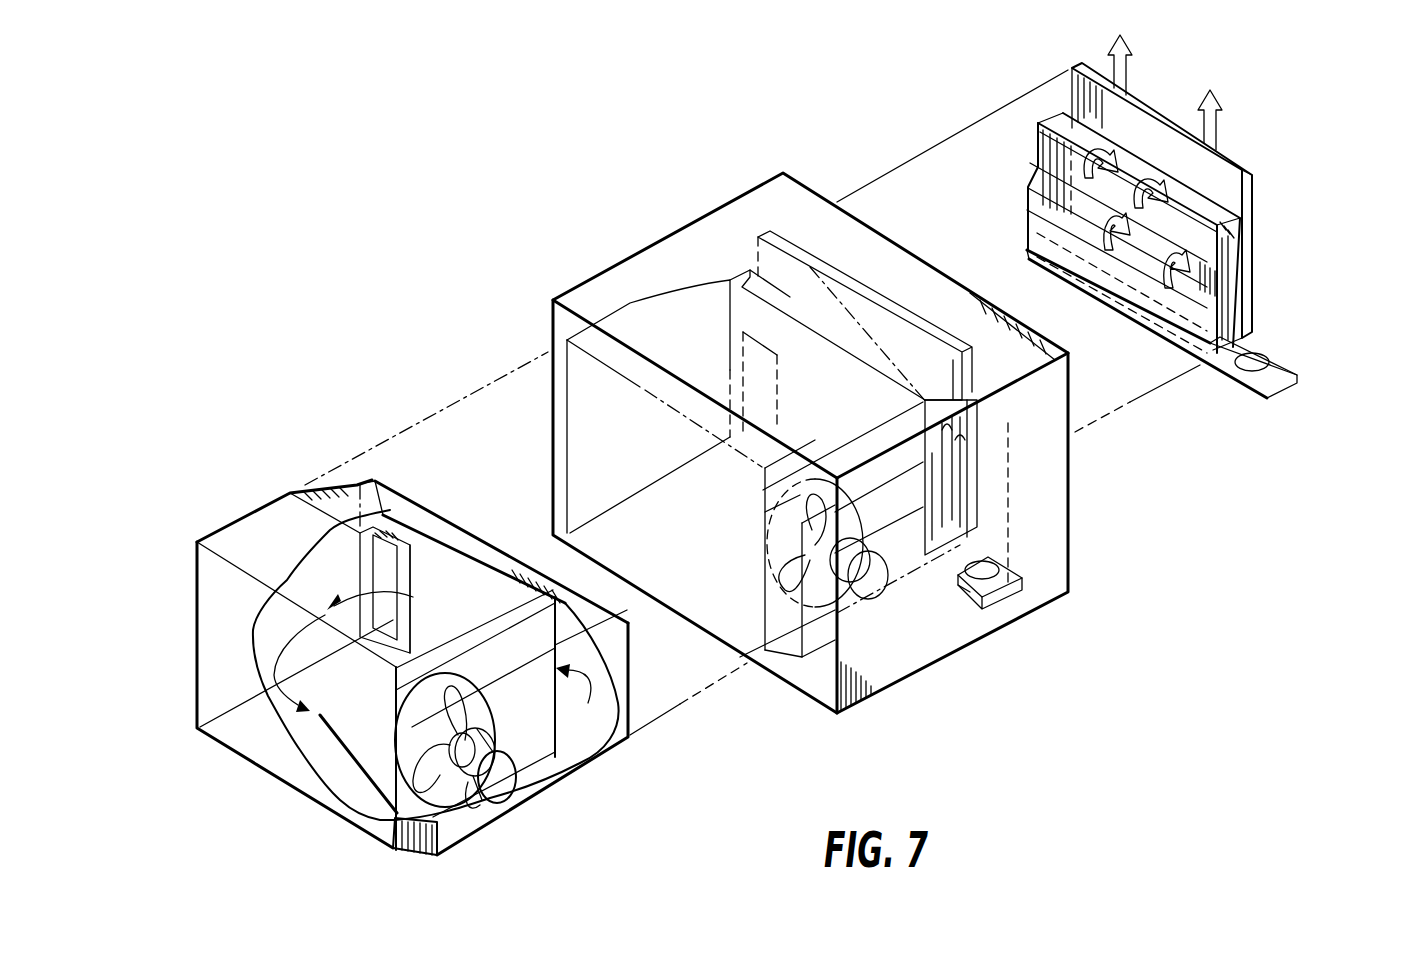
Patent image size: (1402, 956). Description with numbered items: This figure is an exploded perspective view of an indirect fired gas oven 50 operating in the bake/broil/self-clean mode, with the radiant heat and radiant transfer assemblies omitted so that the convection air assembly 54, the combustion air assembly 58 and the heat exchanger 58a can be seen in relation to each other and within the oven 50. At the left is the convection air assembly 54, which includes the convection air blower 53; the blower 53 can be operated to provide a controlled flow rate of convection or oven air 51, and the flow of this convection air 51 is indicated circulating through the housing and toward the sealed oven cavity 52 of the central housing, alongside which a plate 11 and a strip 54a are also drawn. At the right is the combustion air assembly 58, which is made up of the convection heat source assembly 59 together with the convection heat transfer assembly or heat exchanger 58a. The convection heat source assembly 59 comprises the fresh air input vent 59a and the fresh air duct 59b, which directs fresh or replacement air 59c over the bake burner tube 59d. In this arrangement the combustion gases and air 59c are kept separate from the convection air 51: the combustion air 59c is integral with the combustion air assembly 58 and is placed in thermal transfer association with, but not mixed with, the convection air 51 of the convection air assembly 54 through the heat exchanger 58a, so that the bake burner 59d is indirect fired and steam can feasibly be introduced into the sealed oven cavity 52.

The plate 11 is at (811, 258).
The indirect fired gas oven 50 is at (588, 238).
The convection air 51 is at (240, 731).
The oven cavity 52 is at (334, 745).
The convection air blower 53 is at (497, 788).
The convection air assembly 54 is at (642, 686).
The flange strip 54a is at (433, 516).
The combustion air assembly 58 is at (1022, 425).
The heat exchanger 58a is at (1275, 318).
The convection heat source assembly 59 is at (1206, 380).
The fresh air input vent 59a is at (997, 563).
The fresh air duct 59b is at (968, 594).
The combustion air 59c is at (1217, 127).
The bake burner tube 59d is at (1035, 222).